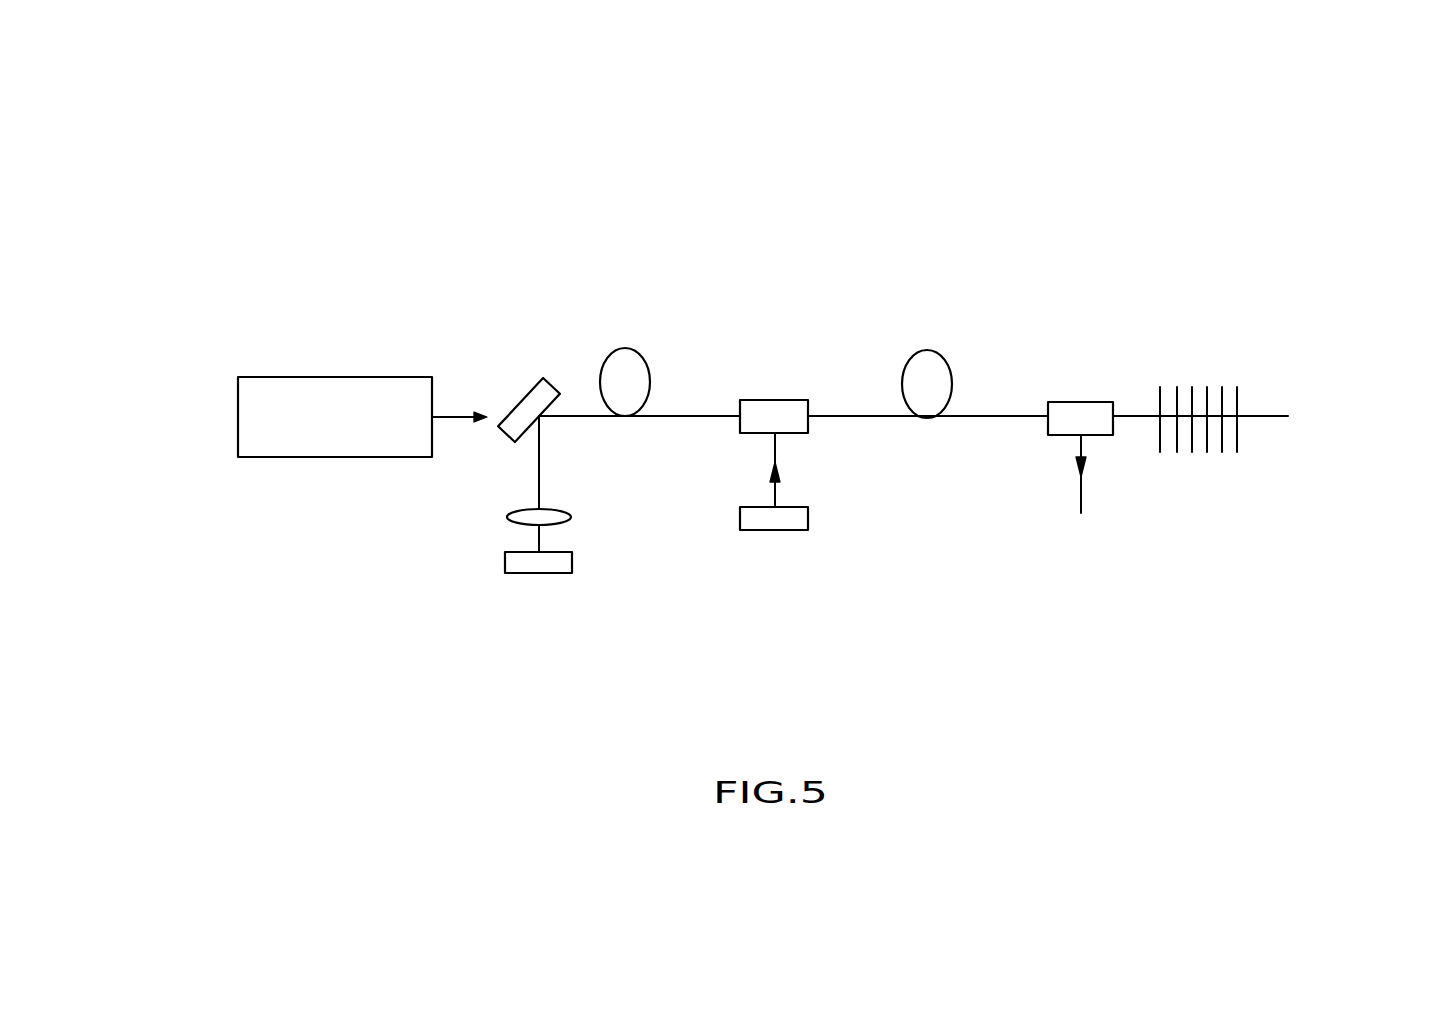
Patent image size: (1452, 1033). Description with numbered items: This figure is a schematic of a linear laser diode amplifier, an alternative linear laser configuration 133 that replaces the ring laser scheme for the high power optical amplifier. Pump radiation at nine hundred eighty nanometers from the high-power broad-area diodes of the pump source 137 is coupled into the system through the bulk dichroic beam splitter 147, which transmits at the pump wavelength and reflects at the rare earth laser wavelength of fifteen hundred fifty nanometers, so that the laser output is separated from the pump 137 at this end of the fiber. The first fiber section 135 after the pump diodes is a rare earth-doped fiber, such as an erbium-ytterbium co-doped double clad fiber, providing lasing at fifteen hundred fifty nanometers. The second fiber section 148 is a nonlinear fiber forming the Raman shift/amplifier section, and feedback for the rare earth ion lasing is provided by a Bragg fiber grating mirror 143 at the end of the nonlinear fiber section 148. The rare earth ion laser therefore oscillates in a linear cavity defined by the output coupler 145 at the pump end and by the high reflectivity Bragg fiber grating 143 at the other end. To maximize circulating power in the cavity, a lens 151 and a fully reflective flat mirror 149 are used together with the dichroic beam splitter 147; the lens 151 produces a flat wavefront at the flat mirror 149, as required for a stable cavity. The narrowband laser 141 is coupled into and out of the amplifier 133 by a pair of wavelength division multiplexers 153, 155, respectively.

The linear laser configuration 133 is at (1122, 247).
The 980 nm pump source 137 is at (238, 424).
The dichroic beam splitter 147 is at (530, 390).
The output coupler 145 is at (587, 492).
The lens 151 is at (507, 515).
The reflective flat mirror 149 is at (542, 573).
The first fiber section 135 is at (793, 307).
The 1550/1651 nm WDM 153 is at (742, 434).
The narrowband laser 141 is at (808, 520).
The second fiber section 148 is at (940, 352).
The 1550/1651 nm WDM 155 is at (1047, 435).
The Bragg fiber grating mirror 143 is at (1448, 342).